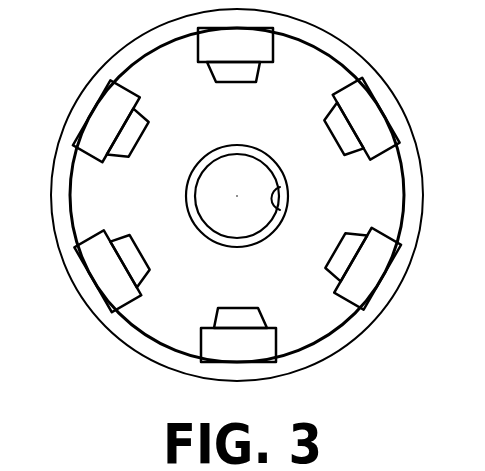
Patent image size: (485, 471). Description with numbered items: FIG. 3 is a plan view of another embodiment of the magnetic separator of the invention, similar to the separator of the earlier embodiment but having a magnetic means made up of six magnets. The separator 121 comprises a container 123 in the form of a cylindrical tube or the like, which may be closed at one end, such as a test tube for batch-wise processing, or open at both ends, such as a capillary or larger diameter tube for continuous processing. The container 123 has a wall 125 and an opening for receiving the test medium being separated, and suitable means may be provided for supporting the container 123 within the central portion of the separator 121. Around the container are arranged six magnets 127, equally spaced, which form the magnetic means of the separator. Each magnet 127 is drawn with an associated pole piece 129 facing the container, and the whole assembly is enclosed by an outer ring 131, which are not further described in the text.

The separator 121 is at (67, 112).
The container 123 is at (247, 146).
The wall 125 is at (272, 190).
The magnets 127 is at (345, 93).
The pole pieces 129 is at (212, 74).
The housing 131 is at (135, 44).